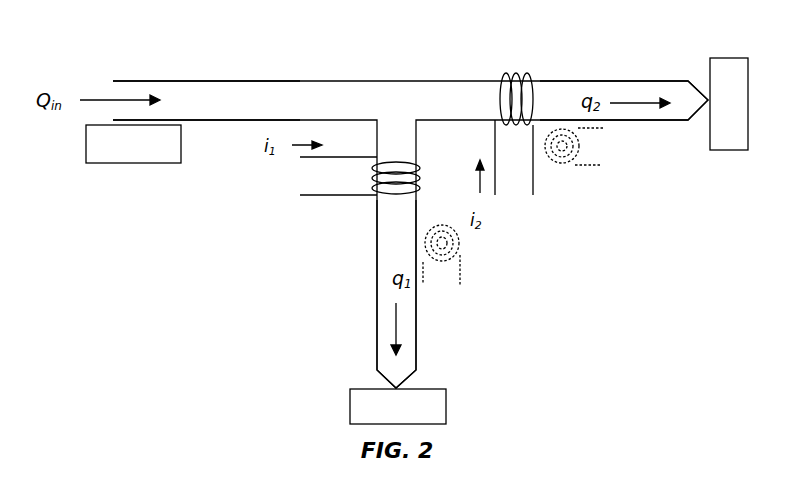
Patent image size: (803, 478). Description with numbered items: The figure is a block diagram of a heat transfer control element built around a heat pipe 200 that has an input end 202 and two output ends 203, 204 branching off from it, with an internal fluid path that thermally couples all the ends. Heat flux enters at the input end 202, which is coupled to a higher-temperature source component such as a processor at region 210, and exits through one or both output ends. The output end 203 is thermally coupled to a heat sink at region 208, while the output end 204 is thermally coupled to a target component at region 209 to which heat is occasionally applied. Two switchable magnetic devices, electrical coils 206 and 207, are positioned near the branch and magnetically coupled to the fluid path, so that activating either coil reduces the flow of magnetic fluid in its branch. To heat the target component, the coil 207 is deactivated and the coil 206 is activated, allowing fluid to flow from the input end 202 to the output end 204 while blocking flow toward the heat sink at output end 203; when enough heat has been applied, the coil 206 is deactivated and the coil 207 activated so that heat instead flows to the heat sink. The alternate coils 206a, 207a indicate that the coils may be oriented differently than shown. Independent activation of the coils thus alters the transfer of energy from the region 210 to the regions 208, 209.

The heat pipe 200 is at (410, 80).
The input end 202 is at (133, 78).
The output end 203 is at (377, 326).
The output end 204 is at (660, 78).
The electrical coil 206 is at (373, 189).
The alternate coil 206a is at (462, 255).
The electrical coil 207 is at (506, 73).
The alternate coil 207a is at (573, 168).
The region 208 is at (350, 410).
The region 209 is at (728, 58).
The region 210 is at (132, 166).